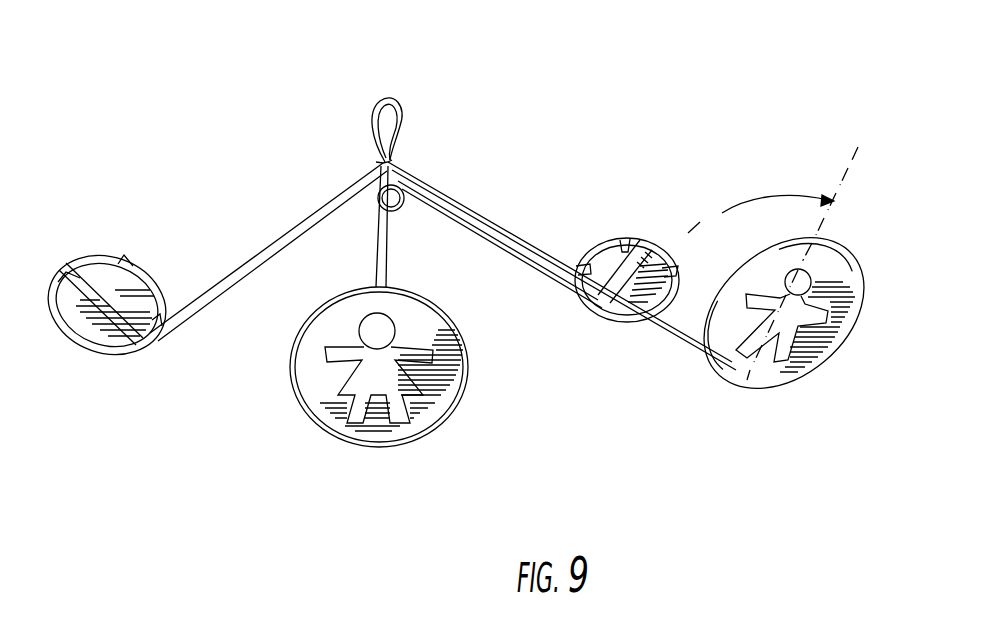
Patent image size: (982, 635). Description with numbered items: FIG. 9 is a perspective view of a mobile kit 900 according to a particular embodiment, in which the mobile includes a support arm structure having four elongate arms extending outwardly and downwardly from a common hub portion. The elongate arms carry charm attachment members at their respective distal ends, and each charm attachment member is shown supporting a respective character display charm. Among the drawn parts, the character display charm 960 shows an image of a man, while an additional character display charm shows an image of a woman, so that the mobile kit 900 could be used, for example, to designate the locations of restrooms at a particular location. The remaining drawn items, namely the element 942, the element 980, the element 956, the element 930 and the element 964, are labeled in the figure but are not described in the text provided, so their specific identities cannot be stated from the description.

The mobile kit 900 is at (598, 58).
The hanging loop 942 is at (393, 99).
The pivot junction 980 is at (370, 160).
The small ring 956 is at (400, 208).
The ring member 930 is at (600, 250).
The tab 964 is at (626, 240).
The character display charm 960 is at (790, 366).